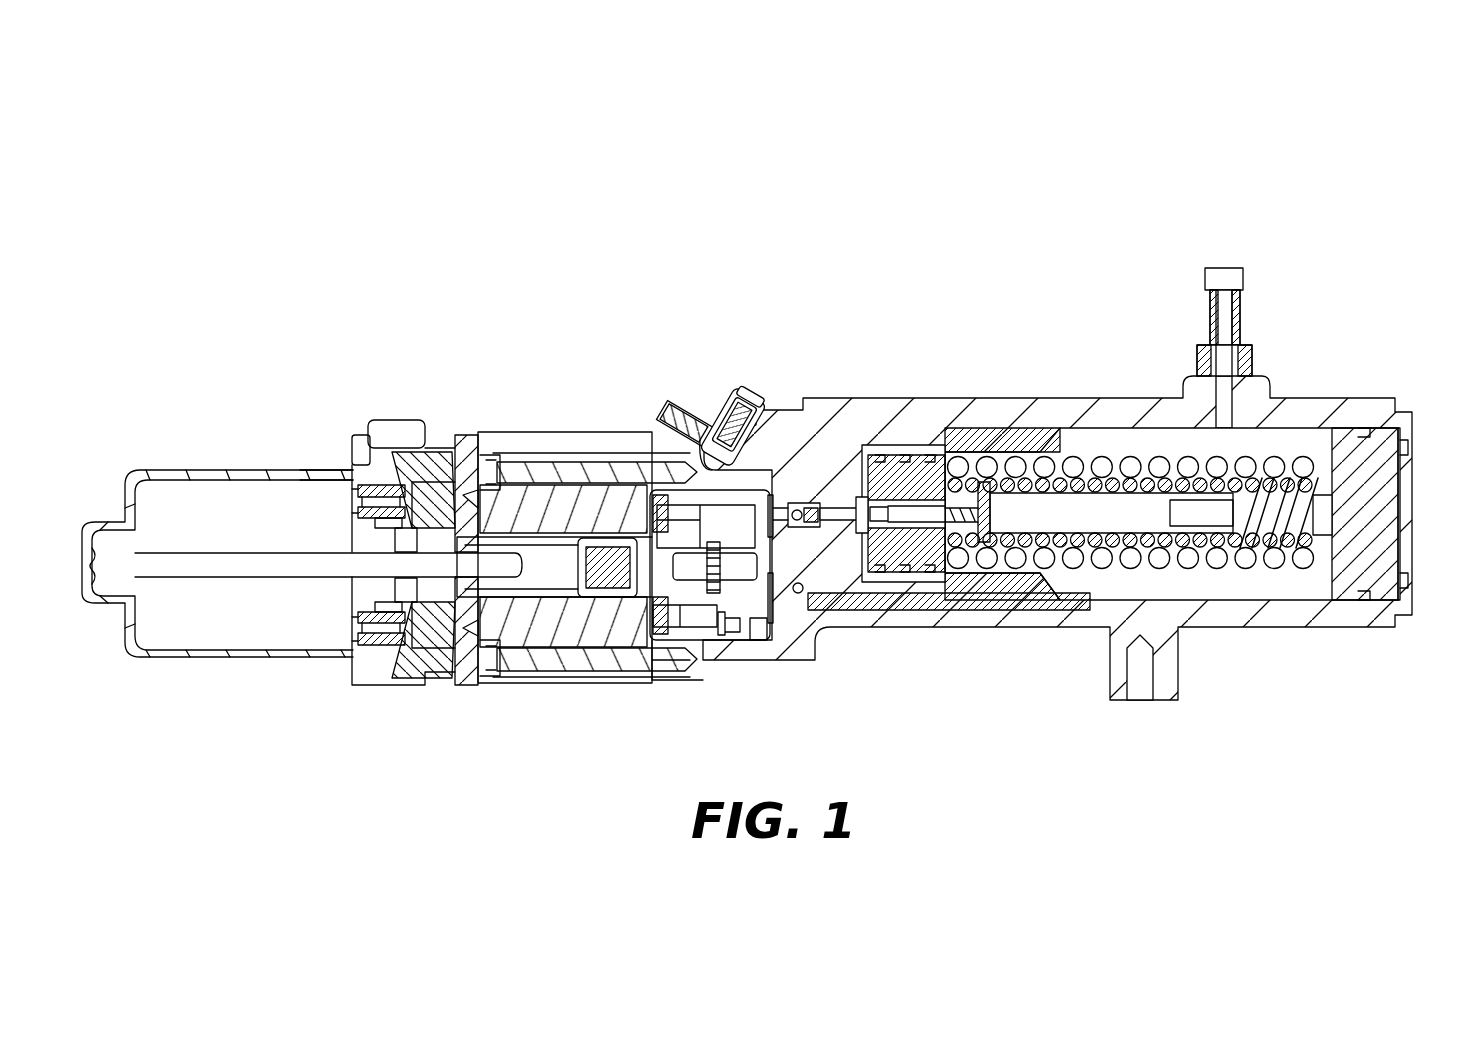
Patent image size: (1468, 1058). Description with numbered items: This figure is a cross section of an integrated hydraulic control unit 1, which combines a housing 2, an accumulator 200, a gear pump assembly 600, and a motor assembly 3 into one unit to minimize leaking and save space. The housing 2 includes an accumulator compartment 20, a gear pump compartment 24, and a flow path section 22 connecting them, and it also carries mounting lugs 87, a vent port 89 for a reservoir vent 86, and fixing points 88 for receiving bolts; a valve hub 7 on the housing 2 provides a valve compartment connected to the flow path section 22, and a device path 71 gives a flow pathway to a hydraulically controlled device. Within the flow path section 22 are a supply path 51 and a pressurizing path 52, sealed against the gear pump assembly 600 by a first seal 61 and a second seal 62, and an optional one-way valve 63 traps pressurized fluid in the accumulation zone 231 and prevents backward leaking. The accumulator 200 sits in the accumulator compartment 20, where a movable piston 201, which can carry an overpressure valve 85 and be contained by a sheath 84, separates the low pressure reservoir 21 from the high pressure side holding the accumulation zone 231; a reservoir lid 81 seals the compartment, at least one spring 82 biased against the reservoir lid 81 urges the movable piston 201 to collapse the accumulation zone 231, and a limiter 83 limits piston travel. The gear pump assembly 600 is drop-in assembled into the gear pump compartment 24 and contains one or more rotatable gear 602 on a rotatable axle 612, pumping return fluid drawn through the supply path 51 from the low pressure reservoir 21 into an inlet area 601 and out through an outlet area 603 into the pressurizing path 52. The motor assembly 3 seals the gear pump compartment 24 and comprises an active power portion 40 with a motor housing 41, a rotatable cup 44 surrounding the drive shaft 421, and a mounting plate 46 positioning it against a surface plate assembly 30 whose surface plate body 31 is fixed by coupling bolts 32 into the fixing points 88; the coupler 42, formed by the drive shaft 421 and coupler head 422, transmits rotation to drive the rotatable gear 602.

The hydraulic control unit 1 is at (470, 160).
The housing 2 is at (822, 270).
The motor assembly 3 is at (420, 340).
The valve hub 7 is at (782, 360).
The accumulator compartment 20 is at (1057, 498).
The low pressure reservoir 21 is at (1280, 585).
The flow path section 22 is at (822, 395).
The gear pump compartment 24 is at (622, 690).
The surface plate assembly 30 is at (538, 390).
The surface plate body 31 is at (560, 435).
The coupling bolts 32 is at (592, 462).
The active power portion 40 is at (250, 428).
The motor housing 41 is at (158, 470).
The coupler 42 is at (336, 588).
The rotatable cup 44 is at (352, 492).
The mounting plate 46 is at (470, 468).
The supply path 51 is at (955, 605).
The pressurizing path 52 is at (848, 522).
The first seal 61 is at (770, 555).
The second seal 62 is at (752, 512).
The one-way valve 63 is at (808, 510).
The device path 71 is at (680, 405).
The reservoir lid 81 is at (1392, 465).
The spring 82 is at (1218, 555).
The limiter 83 is at (1185, 525).
The sheath 84 is at (1027, 580).
The overpressure valve 85 is at (935, 530).
The reservoir vent 86 is at (1262, 322).
The mounting lugs 87 is at (1165, 700).
The fixing points 88 is at (655, 490).
The vent port 89 is at (1262, 375).
The accumulator 200 is at (1335, 378).
The movable piston 201 is at (938, 455).
The accumulation zone 231 is at (868, 495).
The drive shaft 421 is at (256, 568).
The coupler head 422 is at (598, 590).
The gear pump assembly 600 is at (690, 628).
The inlet area 601 is at (742, 565).
The rotatable gear 602 is at (738, 600).
The outlet area 603 is at (722, 415).
The rotatable axle 612 is at (762, 567).